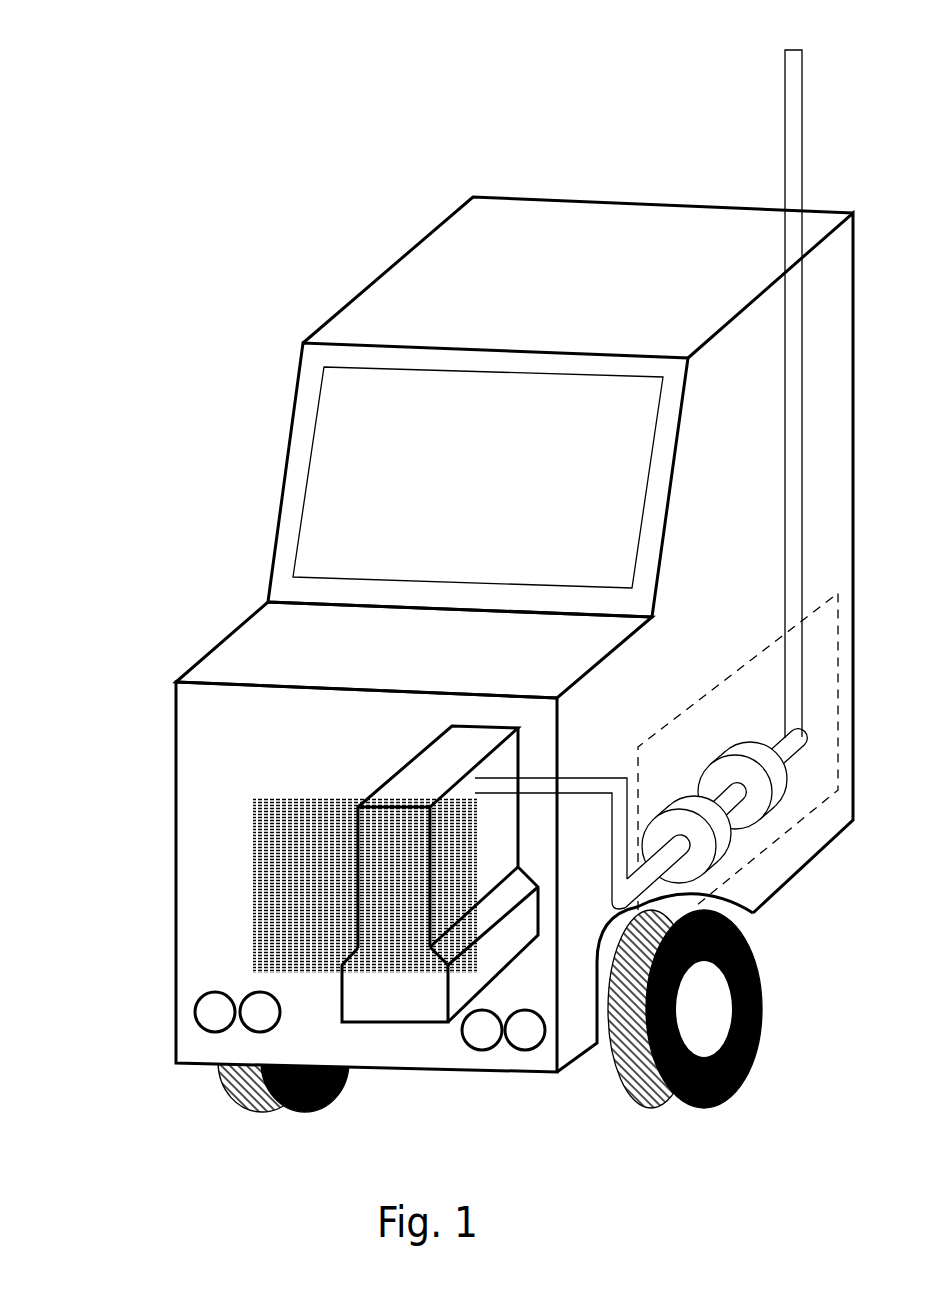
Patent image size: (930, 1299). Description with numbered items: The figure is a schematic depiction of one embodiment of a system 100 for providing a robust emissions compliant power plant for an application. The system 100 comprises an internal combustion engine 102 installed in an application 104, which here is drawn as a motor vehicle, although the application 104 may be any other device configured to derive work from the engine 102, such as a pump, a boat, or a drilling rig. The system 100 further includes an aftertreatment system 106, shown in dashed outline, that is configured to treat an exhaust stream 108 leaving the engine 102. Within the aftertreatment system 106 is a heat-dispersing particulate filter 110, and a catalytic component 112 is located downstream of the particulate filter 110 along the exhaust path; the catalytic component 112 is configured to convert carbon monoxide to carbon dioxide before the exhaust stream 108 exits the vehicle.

The system 100 is at (86, 80).
The internal combustion engine 102 is at (395, 768).
The application 104 is at (343, 305).
The aftertreatment system 106 is at (747, 662).
The exhaust stream 108 is at (785, 113).
The heat-dispersing particulate filter 110 is at (677, 810).
The catalytic component 112 is at (737, 757).